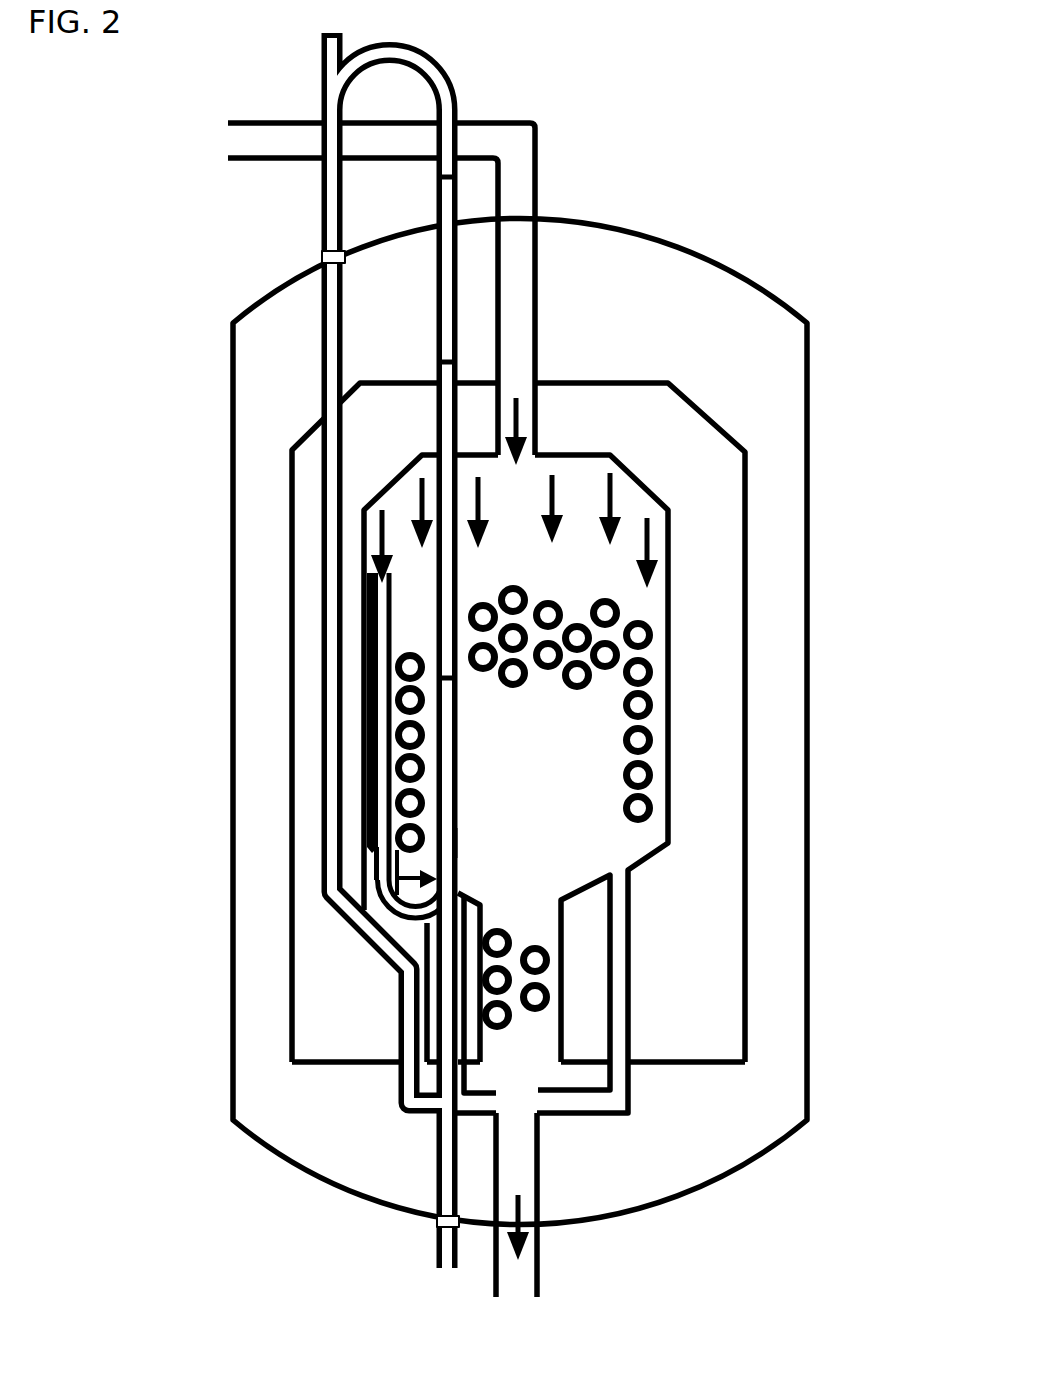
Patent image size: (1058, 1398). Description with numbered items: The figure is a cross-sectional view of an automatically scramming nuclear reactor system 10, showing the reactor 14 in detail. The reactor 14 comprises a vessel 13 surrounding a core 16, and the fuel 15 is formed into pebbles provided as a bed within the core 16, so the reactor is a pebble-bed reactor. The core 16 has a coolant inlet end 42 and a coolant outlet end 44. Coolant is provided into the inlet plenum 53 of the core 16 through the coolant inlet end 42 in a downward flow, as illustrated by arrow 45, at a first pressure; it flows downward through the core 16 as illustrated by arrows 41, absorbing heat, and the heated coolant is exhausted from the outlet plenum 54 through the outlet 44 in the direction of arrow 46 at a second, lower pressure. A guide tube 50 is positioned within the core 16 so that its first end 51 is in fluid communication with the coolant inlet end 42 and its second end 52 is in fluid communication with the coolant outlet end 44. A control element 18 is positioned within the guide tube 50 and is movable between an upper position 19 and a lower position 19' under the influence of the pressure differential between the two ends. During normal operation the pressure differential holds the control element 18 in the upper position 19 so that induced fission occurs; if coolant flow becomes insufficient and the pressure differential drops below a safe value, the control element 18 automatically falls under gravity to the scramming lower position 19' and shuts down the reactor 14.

The automatically scramming nuclear reactor system 10 is at (553, 665).
The vessel 13 is at (748, 690).
The reactor 14 is at (811, 616).
The fuel 15 is at (625, 779).
The core 16 is at (671, 770).
The control element 18 is at (458, 878).
The upper position 19 is at (390, 650).
The lower position 19' is at (453, 726).
The arrows 41 is at (551, 495).
The coolant inlet end 42 is at (537, 313).
The coolant outlet end 44 is at (541, 1280).
The arrow 45 is at (523, 420).
The arrow 46 is at (537, 1215).
The guide tube 50 is at (460, 843).
The first end 51 is at (393, 585).
The second end 52 is at (398, 974).
The inlet plenum 53 is at (636, 493).
The outlet plenum 54 is at (518, 1096).